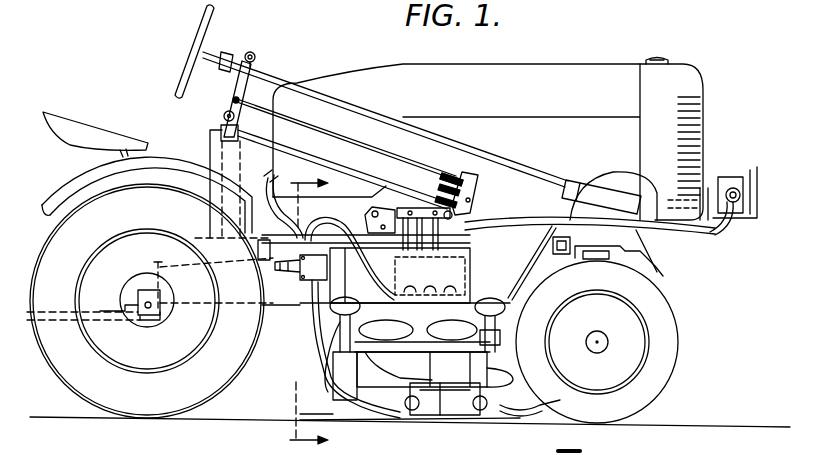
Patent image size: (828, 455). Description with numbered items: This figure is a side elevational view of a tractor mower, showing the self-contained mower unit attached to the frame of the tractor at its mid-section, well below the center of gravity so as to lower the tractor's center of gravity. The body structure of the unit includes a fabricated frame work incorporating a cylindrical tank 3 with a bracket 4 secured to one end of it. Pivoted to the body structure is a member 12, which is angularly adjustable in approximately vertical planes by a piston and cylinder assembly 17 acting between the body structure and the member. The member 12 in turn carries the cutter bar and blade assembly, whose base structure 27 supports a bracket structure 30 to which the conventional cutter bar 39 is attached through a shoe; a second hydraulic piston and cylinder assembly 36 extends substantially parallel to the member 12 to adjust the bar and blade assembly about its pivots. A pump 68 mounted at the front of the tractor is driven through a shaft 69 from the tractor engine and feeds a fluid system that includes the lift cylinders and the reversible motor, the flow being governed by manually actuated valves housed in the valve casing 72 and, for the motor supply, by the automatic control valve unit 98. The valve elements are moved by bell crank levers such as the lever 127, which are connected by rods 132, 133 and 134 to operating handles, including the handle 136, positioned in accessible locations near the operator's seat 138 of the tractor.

The cylindrical tank 3 is at (295, 305).
The bracket 4 is at (158, 264).
The member 12 is at (423, 326).
The piston and cylinder assembly 17 is at (496, 311).
The base structure 27 is at (522, 408).
The bracket structure 30 is at (407, 378).
The hydraulic piston and cylinder assembly 36 is at (340, 322).
The cutter bar 39 is at (424, 413).
The pump 68 is at (731, 177).
The shaft 69 is at (706, 234).
The valve casing 72 is at (345, 319).
The automatic control valve unit 98 is at (308, 270).
The bell crank lever 127 is at (461, 174).
The rod 132 is at (372, 175).
The rod 133 is at (318, 150).
The rod 134 is at (357, 127).
The operating handle 136 is at (251, 52).
The operator's seat 138 is at (67, 125).